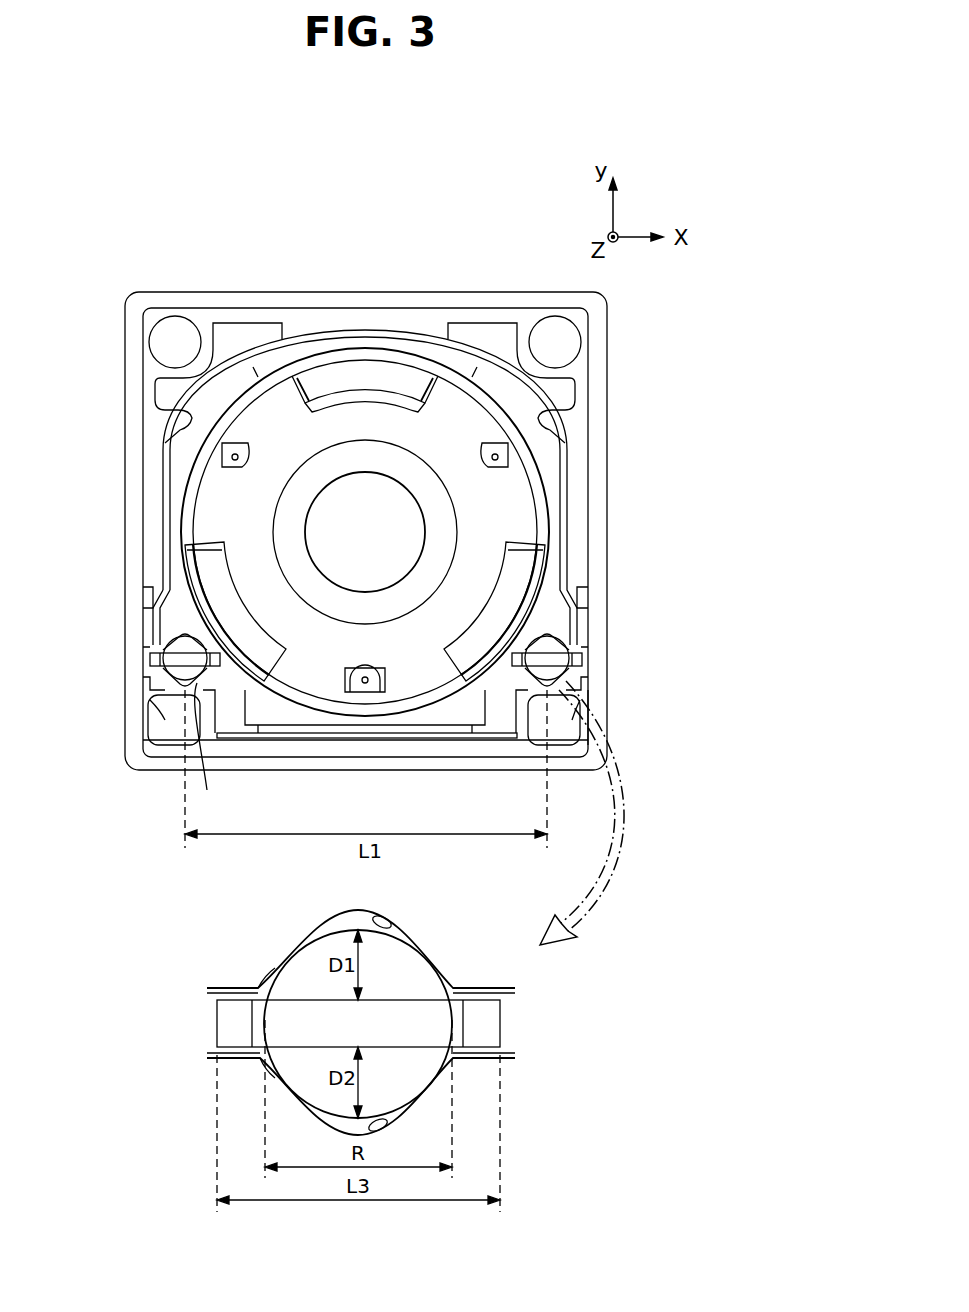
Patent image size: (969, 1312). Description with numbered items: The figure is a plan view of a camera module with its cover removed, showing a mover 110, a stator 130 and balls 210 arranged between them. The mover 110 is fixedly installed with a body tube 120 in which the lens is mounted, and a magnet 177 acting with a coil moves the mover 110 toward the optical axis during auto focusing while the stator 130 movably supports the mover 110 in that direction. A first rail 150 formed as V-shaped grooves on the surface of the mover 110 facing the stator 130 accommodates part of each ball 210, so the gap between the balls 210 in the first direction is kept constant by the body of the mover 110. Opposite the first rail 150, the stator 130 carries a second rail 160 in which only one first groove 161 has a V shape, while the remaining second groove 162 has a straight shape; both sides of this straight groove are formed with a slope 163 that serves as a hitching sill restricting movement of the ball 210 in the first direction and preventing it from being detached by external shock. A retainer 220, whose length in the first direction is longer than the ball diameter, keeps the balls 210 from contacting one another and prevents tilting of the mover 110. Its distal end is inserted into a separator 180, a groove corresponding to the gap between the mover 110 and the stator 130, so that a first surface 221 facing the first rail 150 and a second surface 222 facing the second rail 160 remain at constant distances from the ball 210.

The mover 110 is at (556, 522).
The body tube 120 is at (495, 492).
The stator 130 is at (125, 460).
The first rail 150 is at (180, 640).
The second rail 160 is at (385, 1128).
The first groove 161 is at (582, 697).
The second groove 162 is at (150, 700).
The slope 163 is at (207, 750).
The magnet 177 is at (478, 732).
The separator 180 is at (228, 993).
The ball 210 is at (165, 668).
The retainer 220 is at (150, 659).
The first surface 221 is at (258, 988).
The second surface 222 is at (260, 1058).